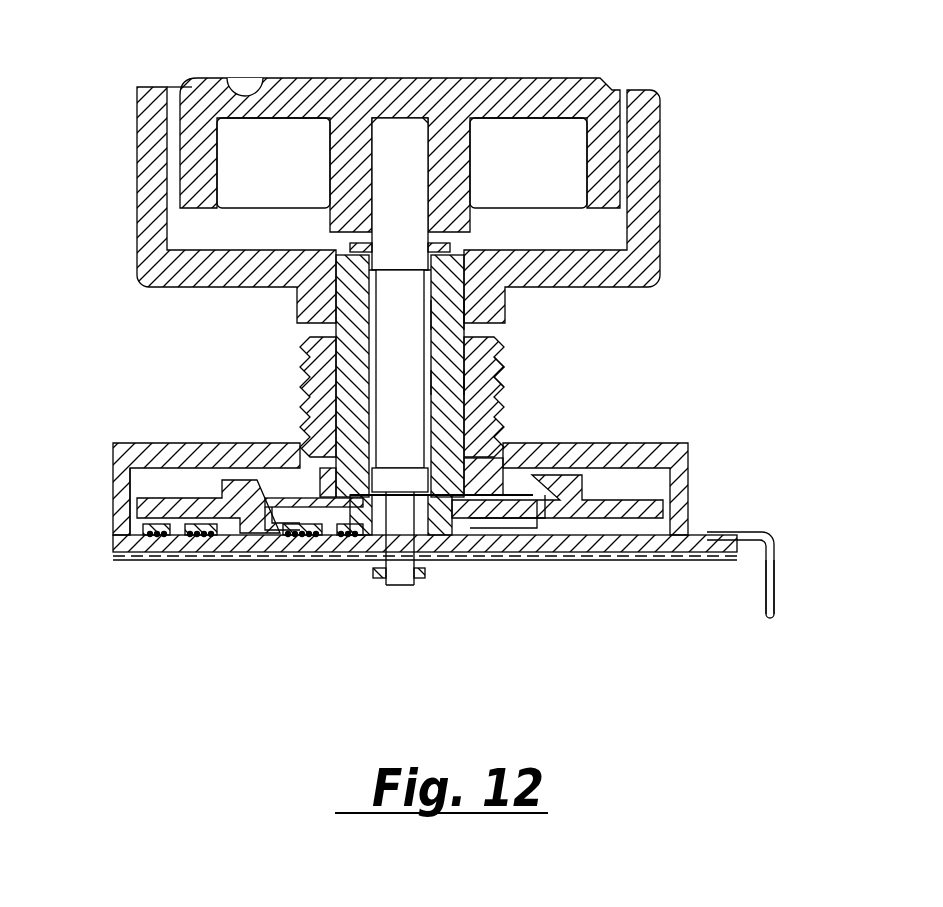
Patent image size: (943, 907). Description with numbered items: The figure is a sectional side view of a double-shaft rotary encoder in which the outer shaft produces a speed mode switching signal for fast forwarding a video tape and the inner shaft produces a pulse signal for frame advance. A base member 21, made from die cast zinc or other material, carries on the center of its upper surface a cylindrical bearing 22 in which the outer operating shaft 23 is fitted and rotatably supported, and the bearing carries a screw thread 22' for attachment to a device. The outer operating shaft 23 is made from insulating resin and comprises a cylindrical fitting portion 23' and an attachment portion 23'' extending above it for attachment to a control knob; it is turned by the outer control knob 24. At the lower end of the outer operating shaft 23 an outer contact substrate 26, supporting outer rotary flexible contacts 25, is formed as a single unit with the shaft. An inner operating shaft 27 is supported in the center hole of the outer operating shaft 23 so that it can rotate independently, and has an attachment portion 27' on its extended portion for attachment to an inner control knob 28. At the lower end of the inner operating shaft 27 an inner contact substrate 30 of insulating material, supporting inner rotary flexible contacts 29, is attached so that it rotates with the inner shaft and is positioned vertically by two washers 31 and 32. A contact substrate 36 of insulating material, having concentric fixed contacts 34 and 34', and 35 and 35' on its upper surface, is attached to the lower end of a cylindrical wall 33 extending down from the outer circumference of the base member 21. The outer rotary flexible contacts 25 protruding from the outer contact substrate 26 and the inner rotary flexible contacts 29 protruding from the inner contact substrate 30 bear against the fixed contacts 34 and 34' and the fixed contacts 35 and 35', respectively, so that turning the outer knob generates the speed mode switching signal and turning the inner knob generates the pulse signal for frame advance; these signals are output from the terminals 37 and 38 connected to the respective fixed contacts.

The base member 21 is at (657, 460).
The cylindrical bearing 22 is at (457, 376).
The screw thread 22' is at (539, 383).
The outer operating shaft 23 is at (475, 375).
The cylindrical fitting portion 23' is at (519, 365).
The attachment portion 23'' is at (519, 315).
The outer control knob 24 is at (650, 205).
The outer rotary flexible contacts 25 is at (152, 540).
The outer contact substrate 26 is at (232, 492).
The inner operating shaft 27 is at (342, 427).
The attachment portion 27' is at (419, 140).
The inner control knob 28 is at (606, 100).
The inner rotary flexible contacts 29 is at (337, 540).
The inner contact substrate 30 is at (480, 540).
The washer 31 is at (452, 246).
The washer 32 is at (415, 580).
The cylindrical wall 33 is at (120, 511).
The fixed contact 34 is at (216, 583).
The fixed contact 34' is at (169, 589).
The fixed contact 35 is at (352, 586).
The fixed contact 35' is at (294, 573).
The contact substrate 36 is at (610, 560).
The terminal 37 is at (765, 596).
The terminal 38 is at (760, 600).